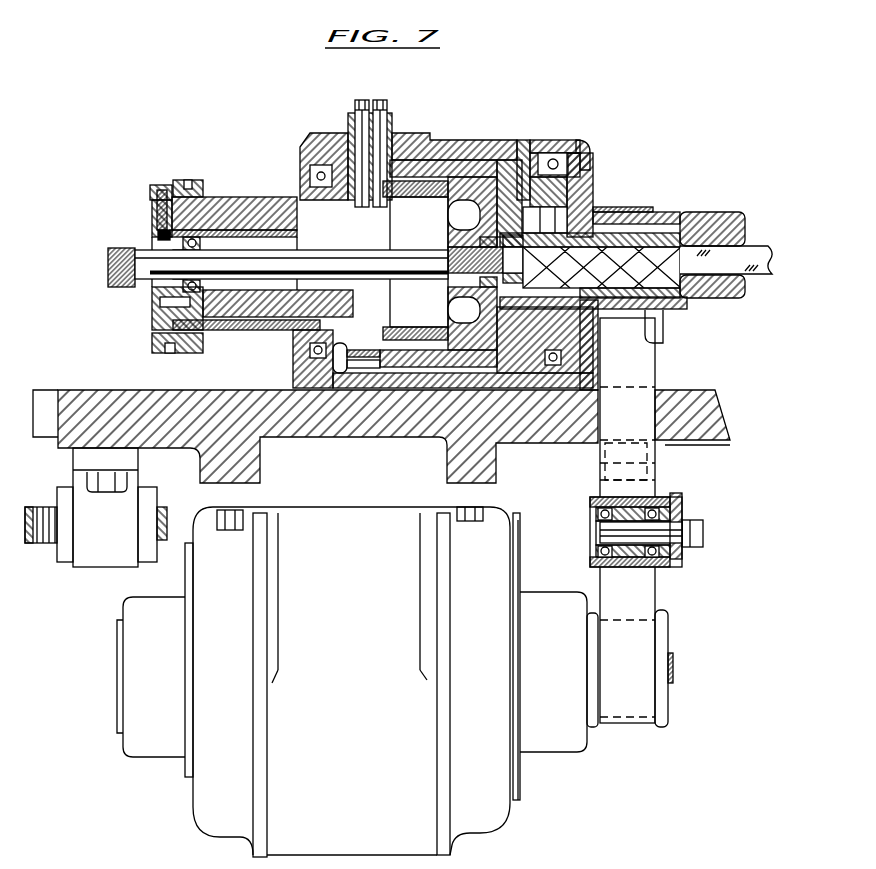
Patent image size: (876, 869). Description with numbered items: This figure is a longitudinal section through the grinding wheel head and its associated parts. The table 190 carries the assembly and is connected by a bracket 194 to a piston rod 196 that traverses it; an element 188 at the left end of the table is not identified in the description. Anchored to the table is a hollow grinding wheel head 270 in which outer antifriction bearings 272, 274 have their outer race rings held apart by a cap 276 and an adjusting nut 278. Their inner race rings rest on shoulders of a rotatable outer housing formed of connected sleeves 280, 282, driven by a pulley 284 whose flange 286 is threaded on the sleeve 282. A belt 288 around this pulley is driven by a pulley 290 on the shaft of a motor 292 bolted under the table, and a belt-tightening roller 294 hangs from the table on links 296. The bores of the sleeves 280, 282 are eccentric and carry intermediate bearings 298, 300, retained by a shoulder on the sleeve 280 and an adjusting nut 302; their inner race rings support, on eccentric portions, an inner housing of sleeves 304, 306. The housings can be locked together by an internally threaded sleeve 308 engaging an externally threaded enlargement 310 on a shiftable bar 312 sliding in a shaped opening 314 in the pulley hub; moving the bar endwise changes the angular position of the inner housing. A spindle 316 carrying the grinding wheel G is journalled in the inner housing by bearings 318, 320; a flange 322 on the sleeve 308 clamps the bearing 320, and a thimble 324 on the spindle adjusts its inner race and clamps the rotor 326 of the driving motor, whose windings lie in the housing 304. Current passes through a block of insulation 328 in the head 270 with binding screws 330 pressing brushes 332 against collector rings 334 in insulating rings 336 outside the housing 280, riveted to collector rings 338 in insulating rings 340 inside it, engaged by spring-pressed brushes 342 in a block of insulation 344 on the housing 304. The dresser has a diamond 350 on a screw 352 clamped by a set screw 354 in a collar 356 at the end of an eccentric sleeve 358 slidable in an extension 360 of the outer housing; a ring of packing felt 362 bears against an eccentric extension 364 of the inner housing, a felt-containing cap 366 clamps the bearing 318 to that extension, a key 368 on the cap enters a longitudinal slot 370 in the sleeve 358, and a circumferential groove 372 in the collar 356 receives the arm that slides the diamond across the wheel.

The bracket lip 188 is at (35, 392).
The table 190 is at (100, 400).
The bracket 194 is at (107, 507).
The piston rod 196 is at (30, 546).
The grinding wheel head 270 is at (476, 140).
The antifriction bearing 272 is at (318, 140).
The antifriction bearing 274 is at (560, 140).
The cap 276 is at (300, 150).
The adjusting nut 278 is at (590, 150).
The housing sleeve 280 is at (430, 133).
The housing sleeve 282 is at (523, 140).
The pulley 284 is at (660, 332).
The flange 286 is at (593, 175).
The belt 288 is at (627, 520).
The pulley 290 is at (670, 622).
The motor 292 is at (352, 682).
The belt-tightening roller 294 is at (655, 570).
The links 296 is at (684, 502).
The intermediate antifriction bearing 298 is at (336, 261).
The intermediate antifriction bearing 300 is at (545, 140).
The adjusting nut 302 is at (600, 212).
The inner housing sleeve 304 is at (445, 160).
The inner housing sleeve 306 is at (508, 160).
The internally threaded sleeve 308 is at (670, 228).
The externally threaded enlargement 310 is at (602, 267).
The shiftable bar 312 is at (726, 260).
The opening 314 is at (716, 300).
The spindle 316 is at (291, 263).
The inner antifriction bearing 318 is at (212, 333).
The inner antifriction bearing 320 is at (486, 340).
The flange 322 is at (452, 236).
The thimble 324 is at (448, 280).
The rotor 326 is at (402, 290).
The block of insulation 328 is at (350, 120).
The binding screws 330 is at (362, 100).
The brushes 332 is at (383, 100).
The collector rings 334 is at (360, 360).
The insulating rings 336 is at (372, 368).
The collector rings 338 is at (337, 375).
The insulating rings 340 is at (398, 336).
The spring-pressed brushes 342 is at (395, 210).
The block of insulation 344 is at (390, 230).
The diamond 350 is at (160, 238).
The screw 352 is at (157, 225).
The set screw 354 is at (152, 205).
The collar 356 is at (150, 190).
The eccentric sleeve 358 is at (240, 198).
The extension 360 is at (256, 318).
The ring of packing felt 362 is at (270, 330).
The eccentric extension 364 is at (228, 300).
The felt-containing cap 366 is at (175, 255).
The key 368 is at (155, 305).
The longitudinal slot 370 is at (170, 318).
The circumferential groove 372 is at (185, 345).
The grinding wheel G is at (108, 270).